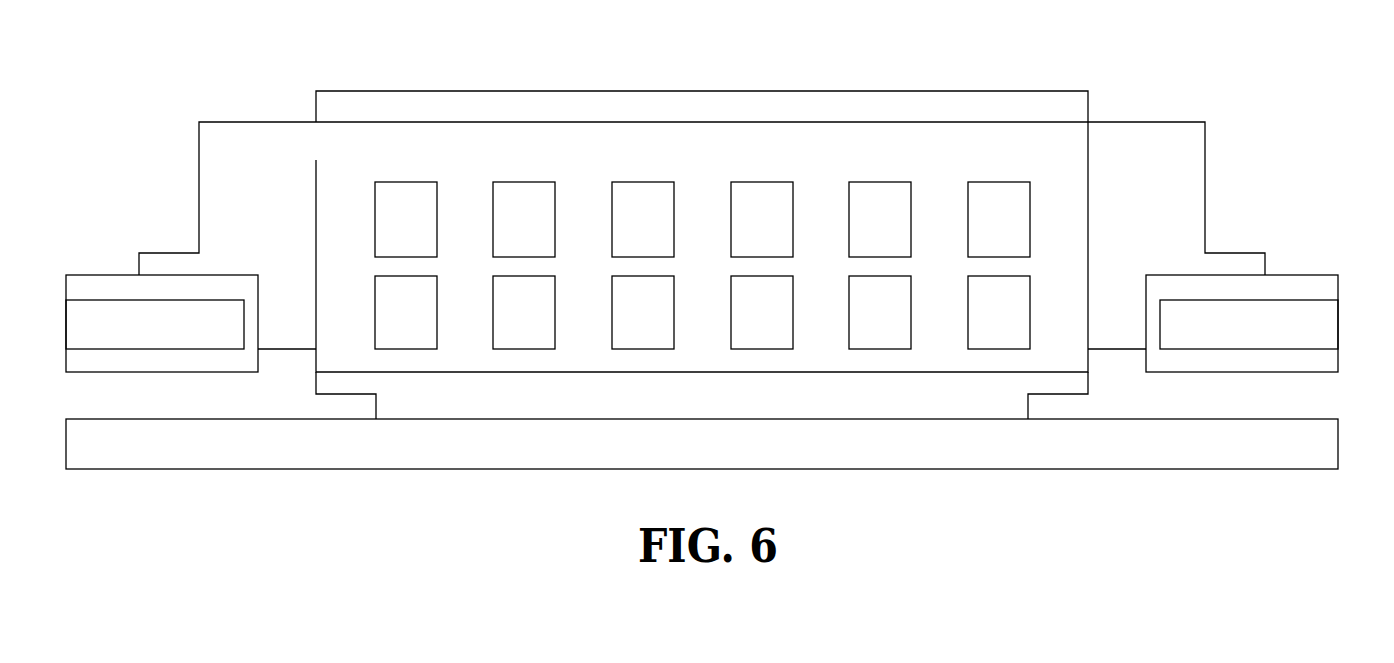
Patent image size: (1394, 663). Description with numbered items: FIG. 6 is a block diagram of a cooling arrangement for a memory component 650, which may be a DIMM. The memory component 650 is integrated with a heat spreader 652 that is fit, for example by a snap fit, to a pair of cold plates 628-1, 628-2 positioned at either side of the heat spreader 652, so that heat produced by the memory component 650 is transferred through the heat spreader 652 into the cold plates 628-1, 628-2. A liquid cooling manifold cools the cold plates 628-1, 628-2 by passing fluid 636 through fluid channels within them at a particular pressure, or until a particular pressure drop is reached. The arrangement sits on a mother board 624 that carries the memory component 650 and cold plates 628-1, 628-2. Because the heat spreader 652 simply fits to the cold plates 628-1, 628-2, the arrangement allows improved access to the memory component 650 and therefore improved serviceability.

The memory component 650 is at (941, 91).
The heat spreader 652 is at (1146, 122).
The cold plate 628-1 is at (101, 275).
The cold plate 628-2 is at (1305, 275).
The fluid 636 is at (66, 322).
The mother board 624 is at (1338, 442).